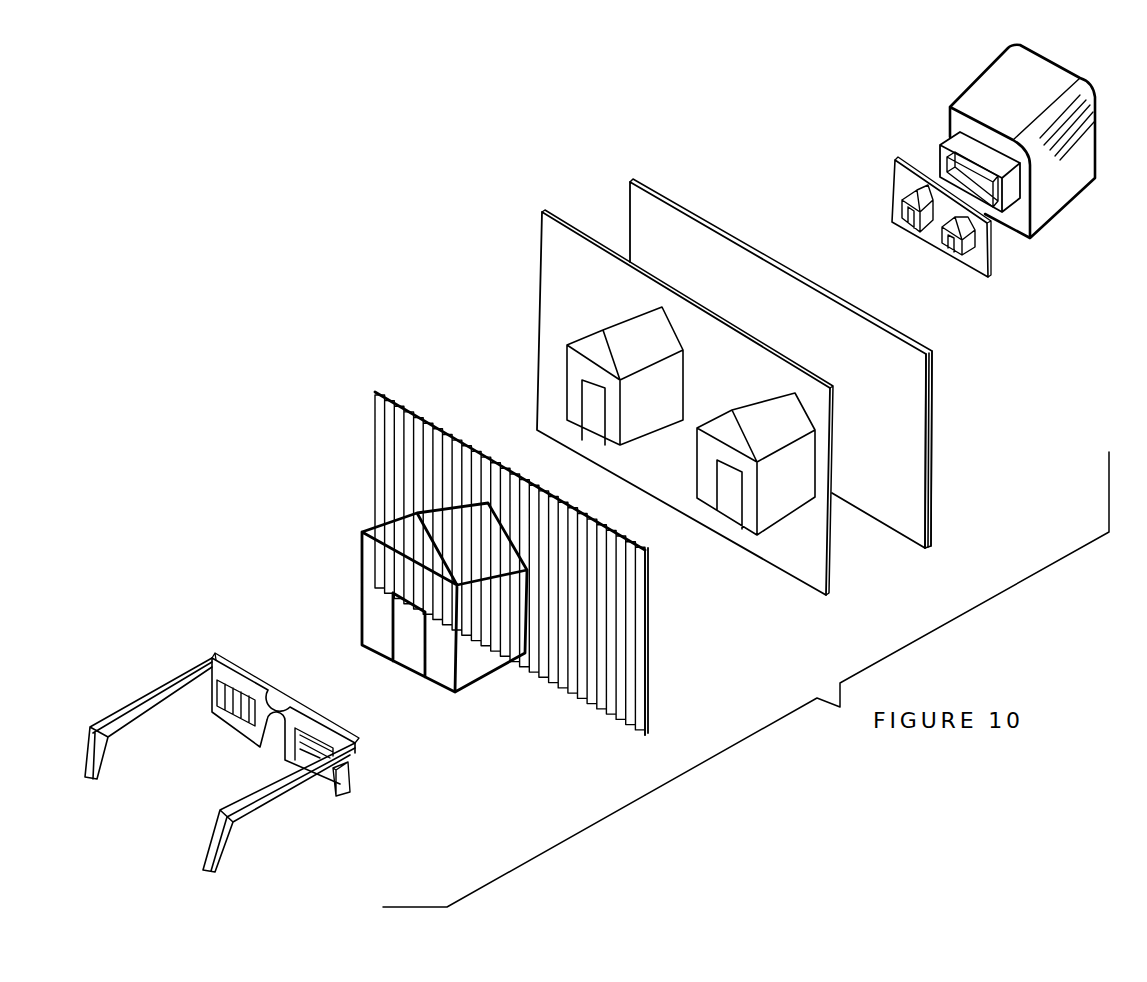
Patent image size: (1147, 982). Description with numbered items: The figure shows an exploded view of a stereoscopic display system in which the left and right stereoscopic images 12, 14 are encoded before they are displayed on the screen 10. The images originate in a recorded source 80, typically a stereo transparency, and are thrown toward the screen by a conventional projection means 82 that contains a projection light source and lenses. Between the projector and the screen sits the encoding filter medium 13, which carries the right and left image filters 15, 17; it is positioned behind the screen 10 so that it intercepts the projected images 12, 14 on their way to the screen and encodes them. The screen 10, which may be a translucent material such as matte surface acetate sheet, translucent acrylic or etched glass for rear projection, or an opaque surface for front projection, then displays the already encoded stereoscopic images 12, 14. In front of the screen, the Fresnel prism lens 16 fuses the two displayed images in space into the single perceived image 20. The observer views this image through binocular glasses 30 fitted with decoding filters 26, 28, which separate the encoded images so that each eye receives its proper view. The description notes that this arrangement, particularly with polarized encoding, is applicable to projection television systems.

The screen 10 is at (656, 402).
The left stereoscopic image 12 is at (653, 350).
The encoding filter medium 13 is at (826, 362).
The right stereoscopic image 14 is at (796, 407).
The right image filter 15 is at (678, 233).
The Fresnel prism lens 16 is at (651, 546).
The left image filter 17 is at (935, 419).
The fused image 20 is at (361, 578).
The decoding filter 26 is at (212, 711).
The decoding filter 28 is at (331, 790).
The binocular glasses 30 is at (248, 762).
The recorded source 80 is at (900, 192).
The projection means 82 is at (1075, 175).